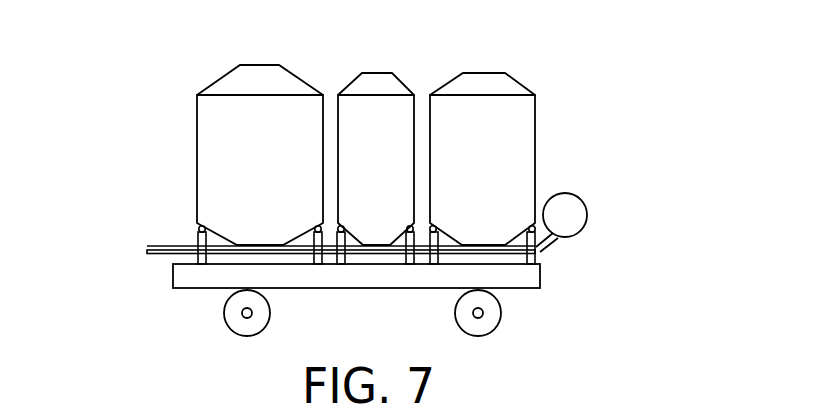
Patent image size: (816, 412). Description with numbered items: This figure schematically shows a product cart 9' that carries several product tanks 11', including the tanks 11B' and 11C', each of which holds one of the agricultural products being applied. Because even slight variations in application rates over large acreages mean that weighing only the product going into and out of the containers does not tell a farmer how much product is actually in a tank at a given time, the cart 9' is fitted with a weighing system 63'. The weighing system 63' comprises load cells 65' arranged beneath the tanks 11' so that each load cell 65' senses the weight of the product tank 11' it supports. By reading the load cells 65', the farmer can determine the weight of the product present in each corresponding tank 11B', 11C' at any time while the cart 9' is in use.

The product tank 11C' is at (392, 158).
The product tank 11' is at (562, 162).
The product tank 11B' is at (422, 131).
The weighing system 63' is at (296, 227).
The load cells 65' is at (366, 248).
The product cart 9' is at (400, 300).